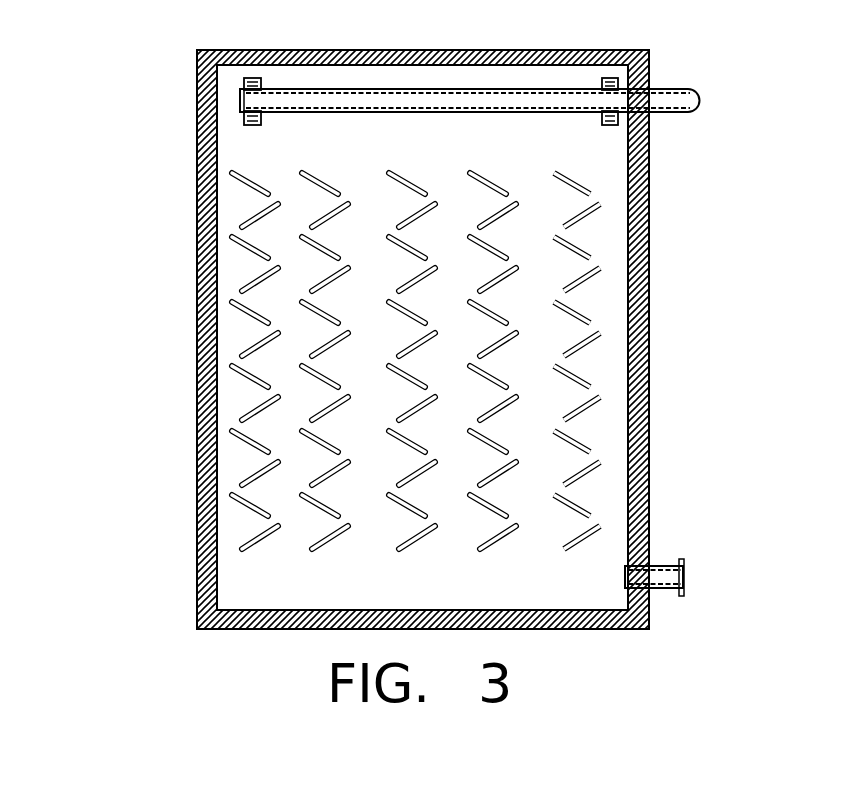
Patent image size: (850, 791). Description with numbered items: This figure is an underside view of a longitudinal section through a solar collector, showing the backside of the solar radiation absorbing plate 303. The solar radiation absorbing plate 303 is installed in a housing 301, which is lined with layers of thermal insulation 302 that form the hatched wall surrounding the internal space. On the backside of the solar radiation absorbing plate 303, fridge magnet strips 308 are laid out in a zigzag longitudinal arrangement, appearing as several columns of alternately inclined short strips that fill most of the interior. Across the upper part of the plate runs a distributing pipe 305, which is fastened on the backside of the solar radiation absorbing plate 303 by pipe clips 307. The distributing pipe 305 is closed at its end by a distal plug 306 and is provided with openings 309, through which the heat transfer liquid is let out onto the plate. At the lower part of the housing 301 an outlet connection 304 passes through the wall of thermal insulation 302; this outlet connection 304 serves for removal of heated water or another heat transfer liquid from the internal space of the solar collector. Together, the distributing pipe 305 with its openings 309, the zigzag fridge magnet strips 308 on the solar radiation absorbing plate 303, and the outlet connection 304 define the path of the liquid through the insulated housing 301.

The housing 301 is at (197, 190).
The thermal insulation 302 is at (650, 300).
The solar radiation absorbing plate 303 is at (608, 436).
The outlet connection 304 is at (660, 562).
The distributing pipe 305 is at (690, 90).
The distal plug 306 is at (240, 102).
The pipe clips 307 is at (240, 78).
The fridge magnet strips 308 is at (600, 212).
The openings 309 is at (587, 116).